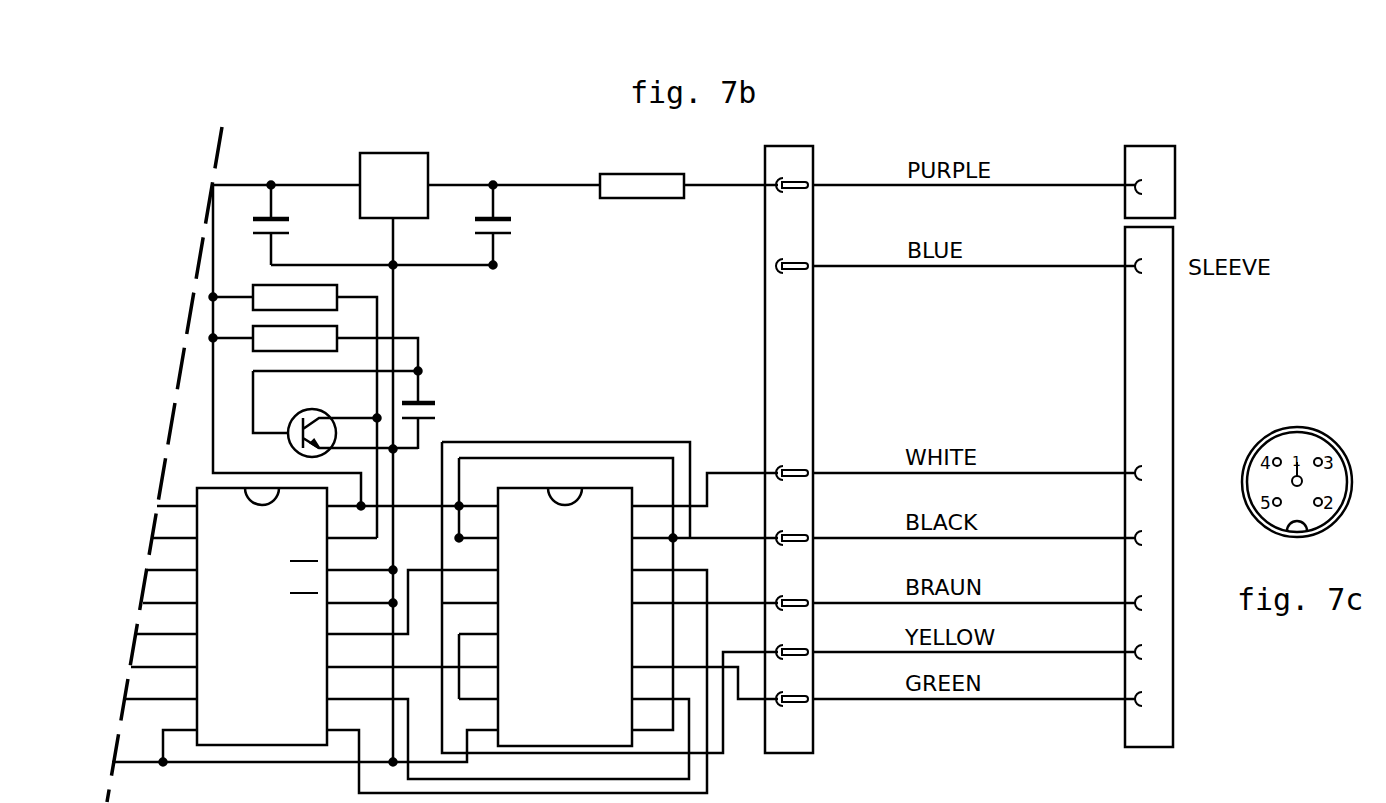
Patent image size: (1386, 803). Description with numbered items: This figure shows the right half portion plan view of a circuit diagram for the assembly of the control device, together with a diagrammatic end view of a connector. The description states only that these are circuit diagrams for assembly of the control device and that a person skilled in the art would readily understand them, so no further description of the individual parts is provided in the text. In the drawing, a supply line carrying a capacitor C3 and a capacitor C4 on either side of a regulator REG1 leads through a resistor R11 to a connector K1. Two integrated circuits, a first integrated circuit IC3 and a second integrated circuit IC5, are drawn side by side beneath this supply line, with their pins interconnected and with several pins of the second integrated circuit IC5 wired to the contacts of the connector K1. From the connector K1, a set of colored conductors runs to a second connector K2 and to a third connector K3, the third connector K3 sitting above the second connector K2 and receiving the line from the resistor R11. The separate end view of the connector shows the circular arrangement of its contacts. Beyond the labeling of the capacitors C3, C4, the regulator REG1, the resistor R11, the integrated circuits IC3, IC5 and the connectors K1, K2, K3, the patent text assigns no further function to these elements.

The capacitor C3 is at (279, 225).
The capacitor C4 is at (501, 225).
The voltage regulator REG1 is at (394, 457).
The resistor R11 is at (642, 186).
The integrated circuit IC3 (memory) IC3 is at (243, 620).
The integrated circuit IC5 is at (610, 597).
The connector K1 is at (789, 449).
The connector K2 (plug) K2 is at (1149, 487).
The connector K3 is at (1150, 182).